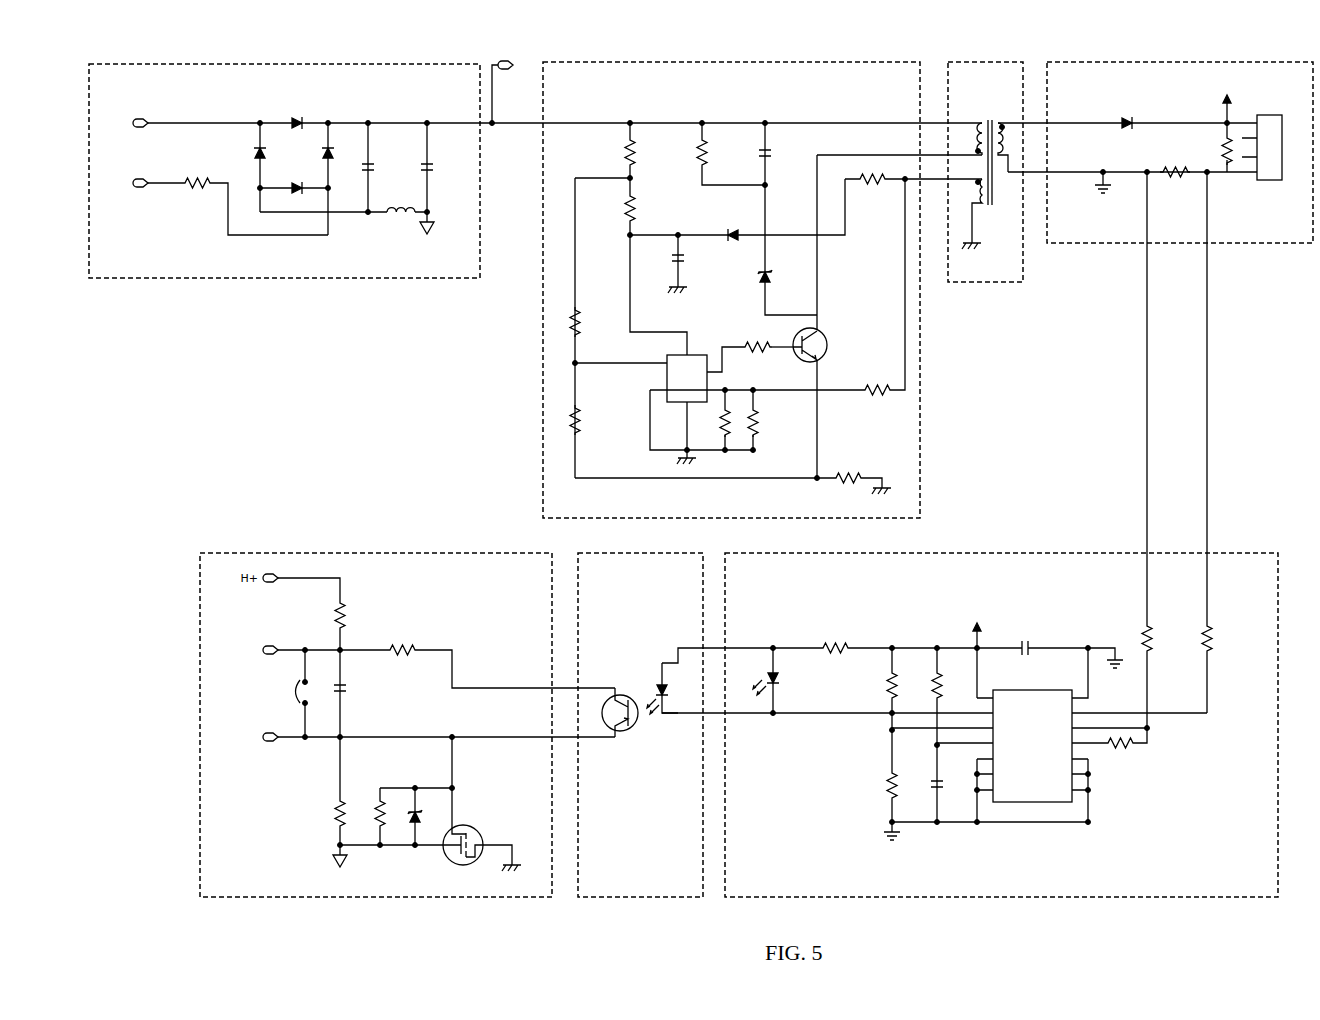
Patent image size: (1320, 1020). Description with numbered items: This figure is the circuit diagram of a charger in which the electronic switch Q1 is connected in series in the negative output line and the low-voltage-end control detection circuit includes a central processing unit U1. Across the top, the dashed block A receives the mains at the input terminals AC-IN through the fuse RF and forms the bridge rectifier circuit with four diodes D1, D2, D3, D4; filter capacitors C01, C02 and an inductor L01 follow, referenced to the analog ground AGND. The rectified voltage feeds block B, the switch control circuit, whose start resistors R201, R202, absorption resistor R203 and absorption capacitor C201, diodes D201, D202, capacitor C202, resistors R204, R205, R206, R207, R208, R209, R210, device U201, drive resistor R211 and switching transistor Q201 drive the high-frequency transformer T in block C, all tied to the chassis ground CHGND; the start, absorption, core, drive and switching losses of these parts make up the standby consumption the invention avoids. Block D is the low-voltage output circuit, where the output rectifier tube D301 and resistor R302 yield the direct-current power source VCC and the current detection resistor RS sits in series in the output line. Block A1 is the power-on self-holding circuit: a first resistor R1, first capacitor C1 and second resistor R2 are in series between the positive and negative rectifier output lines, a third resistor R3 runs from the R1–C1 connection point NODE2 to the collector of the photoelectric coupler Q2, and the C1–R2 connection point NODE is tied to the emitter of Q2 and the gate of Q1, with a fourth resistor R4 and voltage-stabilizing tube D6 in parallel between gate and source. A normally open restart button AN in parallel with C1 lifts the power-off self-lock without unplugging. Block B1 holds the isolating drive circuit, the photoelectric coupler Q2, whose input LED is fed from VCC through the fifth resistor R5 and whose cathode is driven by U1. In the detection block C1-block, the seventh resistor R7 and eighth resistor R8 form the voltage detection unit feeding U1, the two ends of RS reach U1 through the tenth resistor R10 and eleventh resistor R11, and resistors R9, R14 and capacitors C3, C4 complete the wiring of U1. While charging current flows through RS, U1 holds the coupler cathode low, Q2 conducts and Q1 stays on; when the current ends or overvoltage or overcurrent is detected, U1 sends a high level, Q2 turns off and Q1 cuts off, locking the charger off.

The AC input rectifier block A is at (284, 162).
The switching control block B is at (731, 280).
The transformer block C is at (985, 162).
The output block D is at (1180, 142).
The node control block A1 is at (376, 713).
The optocoupler block B1 is at (640, 714).
The microcontroller block C1-block is at (1001, 714).
The AC input terminals AC-IN is at (149, 153).
The rectifier diode D1 is at (296, 115).
The rectifier diode D2 is at (294, 181).
The rectifier diode D3 is at (337, 179).
The rectifier diode D4 is at (269, 167).
The fuse resistor RF is at (255, 197).
The filter capacitor C01 is at (382, 168).
The filter capacitor C02 is at (441, 172).
The filter inductor L01 is at (401, 201).
The analog ground AGND is at (385, 557).
The chassis ground CHGND is at (742, 574).
The start resistor R201 is at (647, 151).
The start resistor R202 is at (647, 207).
The absorption resistor R203 is at (731, 154).
The absorption capacitor C201 is at (783, 155).
The diode D201 is at (732, 228).
The zener diode D202 is at (781, 277).
The capacitor C202 is at (693, 263).
The resistor R204 is at (913, 172).
The resistor R205 is at (591, 322).
The resistor R206 is at (591, 420).
The resistor R207 is at (710, 420).
The resistor R208 is at (769, 420).
The resistor R209 is at (877, 397).
The resistor R210 is at (862, 475).
The drive resistor R211 is at (767, 340).
The control IC U201 is at (704, 405).
The switching transistor Q201 is at (827, 403).
The high-frequency transformer T is at (985, 175).
The output rectifier tube D301 is at (1126, 115).
The direct-current power source VCC is at (1102, 388).
The resistor R302 is at (1212, 147).
The current detection resistor RS is at (1177, 165).
The first resistor R1 is at (350, 625).
The second resistor R2 is at (350, 792).
The third resistor R3 is at (501, 659).
The fourth resistor R4 is at (389, 817).
The first capacitor C1 is at (350, 693).
The voltage-stabilizing tube D6 is at (424, 817).
The electronic switch Q1 is at (482, 854).
The restart button AN is at (280, 693).
The node NODE is at (433, 747).
The node terminal 2 NODE2 is at (317, 642).
The photoelectric coupler Q2 is at (711, 692).
The fifth resistor R5 is at (921, 641).
The light emitting diode LED is at (778, 681).
The seventh resistor R7 is at (901, 689).
The resistor R14 is at (950, 697).
The eighth resistor R8 is at (884, 785).
The capacitor C4 is at (946, 784).
The capacitor C3 is at (1070, 647).
The central processing unit U1 is at (1091, 746).
The resistor R9 is at (1126, 747).
The tenth resistor R10 is at (1160, 450).
The eleventh resistor R11 is at (1220, 442).